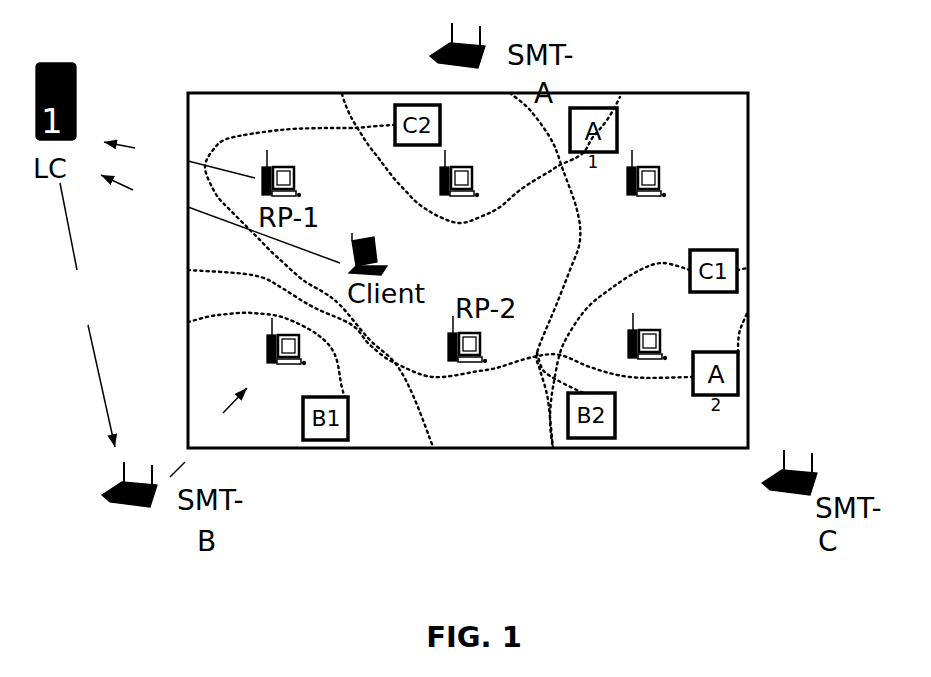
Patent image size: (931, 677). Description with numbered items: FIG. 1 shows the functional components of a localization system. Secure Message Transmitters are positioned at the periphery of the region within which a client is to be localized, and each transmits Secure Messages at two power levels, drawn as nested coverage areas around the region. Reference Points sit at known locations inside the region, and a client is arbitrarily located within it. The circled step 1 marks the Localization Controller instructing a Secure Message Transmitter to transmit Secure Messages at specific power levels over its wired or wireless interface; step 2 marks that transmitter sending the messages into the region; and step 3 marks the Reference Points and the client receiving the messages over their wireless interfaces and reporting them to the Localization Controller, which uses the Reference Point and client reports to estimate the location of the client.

The location controller to smart AP SMT-B configuration link 1 is at (84, 315).
The smart AP SMT-B coverage/scan into area 2 is at (208, 432).
The reference point and client report to location controller 3 is at (220, 192).